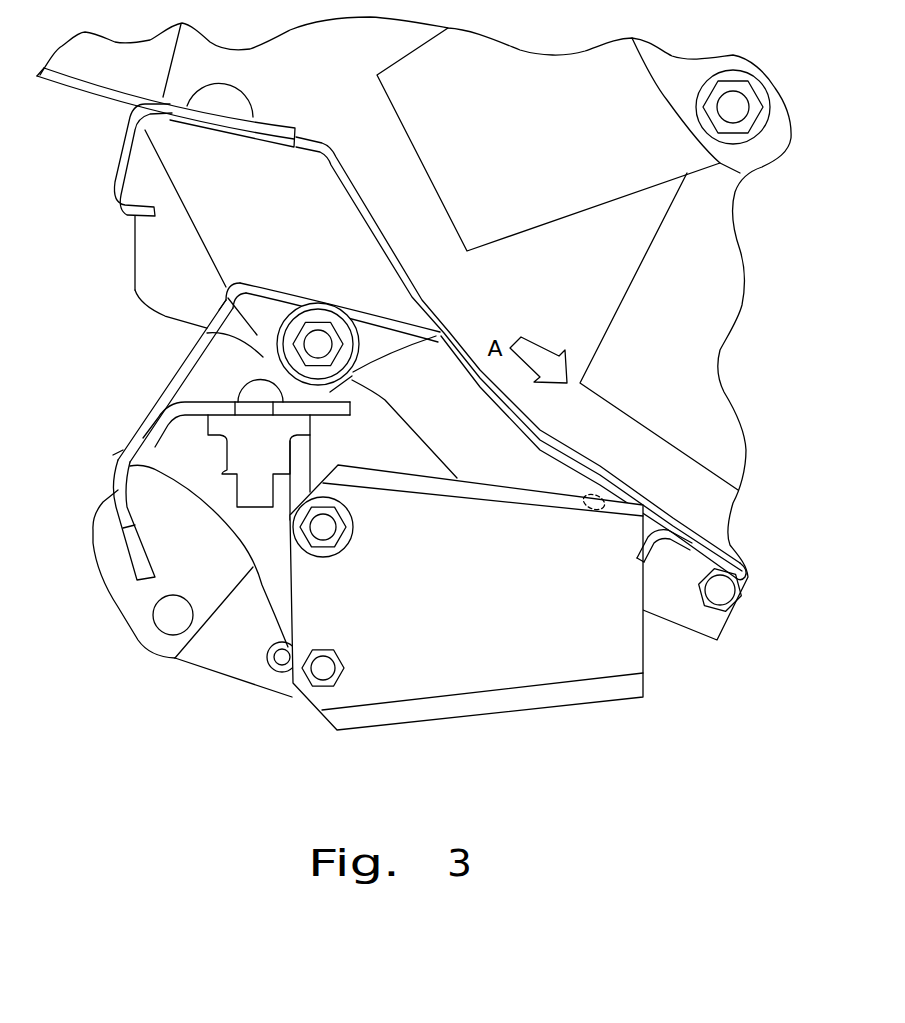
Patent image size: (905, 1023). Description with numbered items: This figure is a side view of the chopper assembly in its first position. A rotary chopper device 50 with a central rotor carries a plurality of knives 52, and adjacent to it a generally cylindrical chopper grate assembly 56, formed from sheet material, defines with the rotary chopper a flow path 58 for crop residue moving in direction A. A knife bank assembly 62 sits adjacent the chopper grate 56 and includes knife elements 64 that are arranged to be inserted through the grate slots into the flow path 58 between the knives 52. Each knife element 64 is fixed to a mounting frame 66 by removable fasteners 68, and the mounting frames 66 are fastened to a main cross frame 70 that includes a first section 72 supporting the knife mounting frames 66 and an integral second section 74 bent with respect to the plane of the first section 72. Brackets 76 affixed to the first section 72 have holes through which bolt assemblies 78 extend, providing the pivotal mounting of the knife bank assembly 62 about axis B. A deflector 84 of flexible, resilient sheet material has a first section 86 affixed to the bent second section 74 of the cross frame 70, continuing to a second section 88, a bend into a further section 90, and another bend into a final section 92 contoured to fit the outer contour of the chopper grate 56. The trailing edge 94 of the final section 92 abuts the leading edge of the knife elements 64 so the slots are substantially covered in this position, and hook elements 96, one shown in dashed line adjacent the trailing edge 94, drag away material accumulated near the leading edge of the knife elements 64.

The rotary chopper device 50 is at (637, 234).
The knives 52 is at (530, 230).
The chopper grate assembly 56 is at (383, 238).
The flow path 58 is at (530, 307).
The knife bank assembly 62 is at (260, 715).
The knife elements 64 is at (470, 707).
The mounting frames 66 is at (283, 512).
The removable fasteners 68 is at (334, 530).
The main cross frame 70 is at (204, 387).
The first section 72 is at (352, 375).
The second section 74 is at (110, 471).
The brackets 76 is at (208, 331).
The bolt assemblies 78 is at (320, 338).
The deflector 84 is at (230, 262).
The first section 86 is at (134, 428).
The second section 88 is at (208, 304).
The further section 90 is at (285, 292).
The final section 92 is at (500, 413).
The trailing edge 94 is at (633, 500).
The hook elements 96 is at (587, 510).